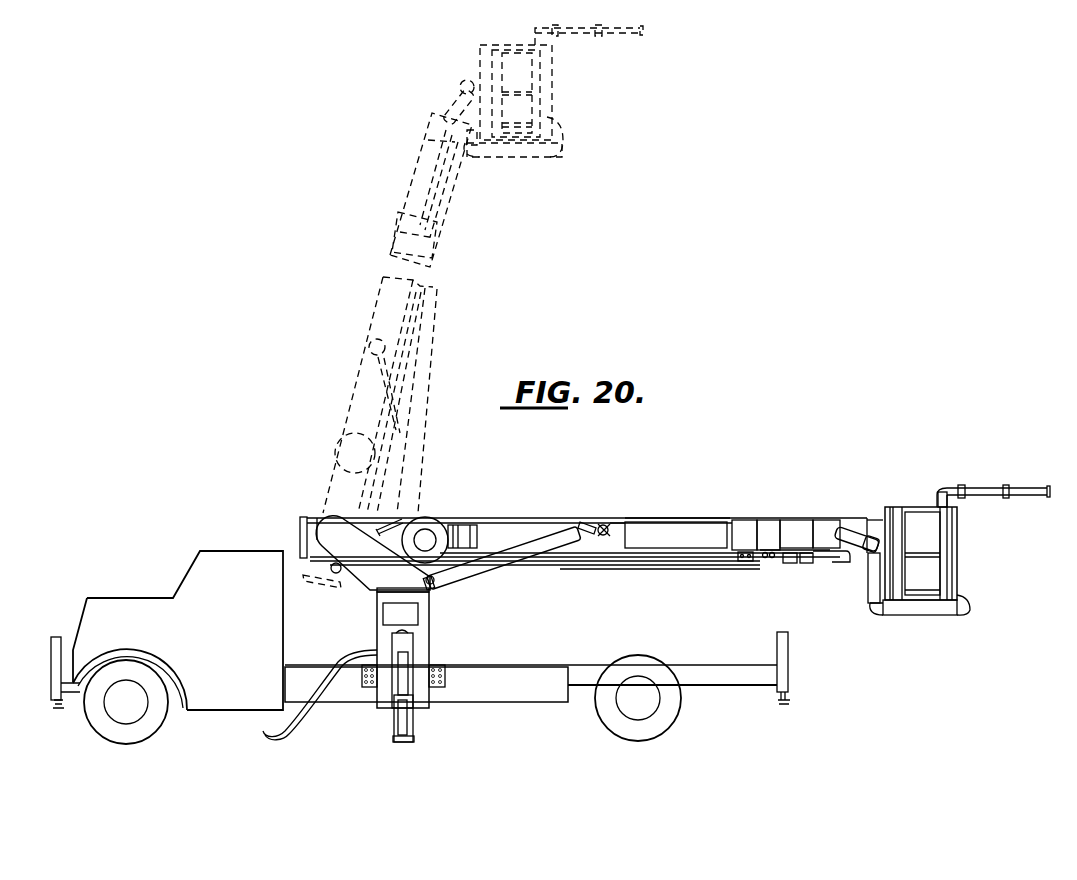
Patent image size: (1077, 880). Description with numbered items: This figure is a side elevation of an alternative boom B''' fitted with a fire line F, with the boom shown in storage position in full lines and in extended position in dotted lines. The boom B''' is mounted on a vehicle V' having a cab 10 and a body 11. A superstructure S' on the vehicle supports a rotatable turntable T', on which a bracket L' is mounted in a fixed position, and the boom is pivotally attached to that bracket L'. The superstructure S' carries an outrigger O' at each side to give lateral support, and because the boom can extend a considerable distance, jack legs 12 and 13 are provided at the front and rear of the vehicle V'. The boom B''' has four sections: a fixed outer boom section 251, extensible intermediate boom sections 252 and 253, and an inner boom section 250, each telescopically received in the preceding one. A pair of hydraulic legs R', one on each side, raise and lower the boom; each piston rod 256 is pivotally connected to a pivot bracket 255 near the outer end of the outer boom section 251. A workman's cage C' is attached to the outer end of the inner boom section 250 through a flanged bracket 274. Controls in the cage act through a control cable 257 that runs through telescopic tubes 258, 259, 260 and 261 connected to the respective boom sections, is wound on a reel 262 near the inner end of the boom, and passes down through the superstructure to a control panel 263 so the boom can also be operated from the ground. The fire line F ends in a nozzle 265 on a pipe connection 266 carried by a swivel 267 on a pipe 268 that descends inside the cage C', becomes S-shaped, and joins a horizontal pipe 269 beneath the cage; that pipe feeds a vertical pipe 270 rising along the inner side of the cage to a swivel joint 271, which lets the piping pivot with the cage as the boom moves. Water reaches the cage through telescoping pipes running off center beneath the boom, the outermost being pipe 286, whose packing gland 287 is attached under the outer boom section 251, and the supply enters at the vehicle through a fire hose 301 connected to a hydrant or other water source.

The cab 10 is at (240, 560).
The body 11 is at (578, 669).
The jack leg 12 is at (58, 705).
The jack leg 13 is at (790, 690).
The fire hose 301 is at (289, 733).
The vehicle V is at (543, 665).
The superstructure S is at (429, 615).
The control panel 263 is at (422, 628).
The outrigger O is at (419, 732).
The bracket L is at (360, 589).
The turntable T is at (441, 586).
The hydraulic cylinder assembly or leg R is at (497, 563).
The reel 262 is at (432, 530).
The control cable 257 is at (397, 514).
The boom B is at (518, 519).
The piston rod 256 is at (583, 523).
The pivot bracket 255 is at (612, 522).
The outer boom section 251 is at (665, 519).
The telescopic tube 258 is at (672, 540).
The telescoping pipe 286 is at (678, 566).
The intermediate boom section 252 is at (758, 519).
The telescopic tube 259 is at (762, 552).
The telescopic tube 260 is at (802, 552).
The inner boom section 250 is at (816, 519).
The flanged bracket 274 is at (835, 518).
The packing gland 287 is at (755, 562).
The intermediate boom section 253 is at (791, 563).
The telescopic tube 261 is at (815, 563).
The swivel joint 271 is at (840, 562).
The vertical pipe 270 is at (868, 595).
The workman's cage C is at (965, 541).
The horizontal pipe 269 is at (909, 615).
The pipe 268 is at (972, 593).
The swivel 267 is at (944, 490).
The pipe connection 266 is at (985, 497).
The fire line F is at (986, 479).
The nozzle 265 is at (1008, 486).